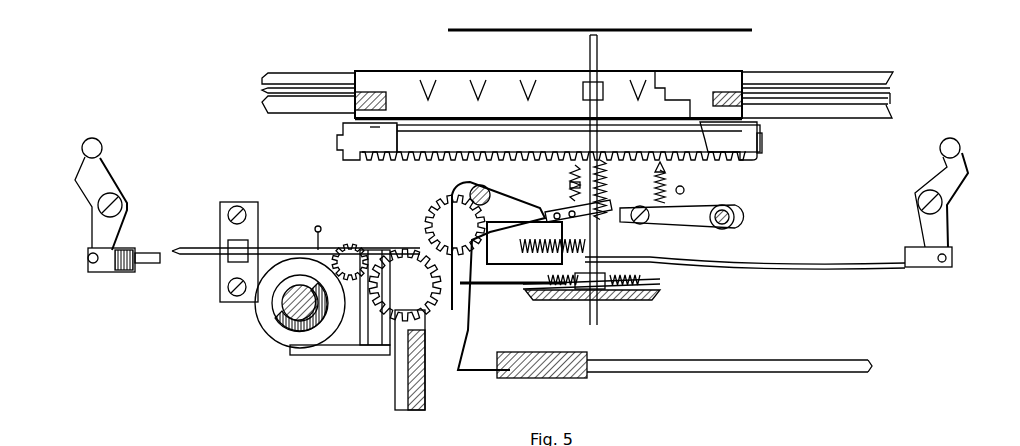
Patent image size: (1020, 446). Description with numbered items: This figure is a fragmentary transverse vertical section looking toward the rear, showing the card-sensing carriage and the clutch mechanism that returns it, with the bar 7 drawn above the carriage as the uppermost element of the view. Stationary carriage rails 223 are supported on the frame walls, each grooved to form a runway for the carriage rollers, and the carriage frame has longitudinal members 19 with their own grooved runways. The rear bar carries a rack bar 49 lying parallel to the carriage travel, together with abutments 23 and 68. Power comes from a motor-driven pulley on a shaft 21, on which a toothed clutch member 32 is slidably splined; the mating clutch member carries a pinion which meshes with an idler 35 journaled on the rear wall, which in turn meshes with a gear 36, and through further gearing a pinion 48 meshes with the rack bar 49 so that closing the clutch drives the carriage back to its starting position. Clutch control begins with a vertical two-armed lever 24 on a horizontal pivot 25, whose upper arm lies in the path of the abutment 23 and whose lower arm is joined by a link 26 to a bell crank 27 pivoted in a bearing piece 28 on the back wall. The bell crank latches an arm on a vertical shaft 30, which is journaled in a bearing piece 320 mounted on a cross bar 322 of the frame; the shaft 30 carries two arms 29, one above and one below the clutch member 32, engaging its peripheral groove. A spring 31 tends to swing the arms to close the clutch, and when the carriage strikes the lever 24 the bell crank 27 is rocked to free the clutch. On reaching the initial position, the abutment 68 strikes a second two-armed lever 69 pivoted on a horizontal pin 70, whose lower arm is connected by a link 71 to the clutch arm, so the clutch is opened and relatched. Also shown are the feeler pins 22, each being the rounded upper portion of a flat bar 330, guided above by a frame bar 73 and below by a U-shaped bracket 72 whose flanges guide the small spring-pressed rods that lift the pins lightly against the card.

The guide bar 7 is at (683, 30).
The longitudinal member 19 is at (418, 77).
The feeler pin 22 is at (588, 62).
The frame bar 73 is at (602, 95).
The stationary carriage rail 223 is at (268, 90).
The abutment 23 is at (338, 145).
The rack bar 49 is at (453, 152).
The abutment 68 is at (763, 148).
The two-armed lever 24 is at (80, 160).
The horizontal pivot 25 is at (98, 207).
The link 26 is at (162, 264).
The bearing piece 28 is at (225, 225).
The bell crank 27 is at (283, 249).
The spring 31 is at (315, 233).
The arm 29 is at (335, 252).
The shaft 21 is at (284, 306).
The toothed clutch member 32 is at (275, 326).
The idler 35 is at (360, 248).
The vertical shaft 30 is at (412, 298).
The bearing piece 320 is at (400, 388).
The cross bar 322 is at (426, 368).
The gear 36 is at (437, 212).
The pinion 48 is at (572, 185).
The link 71 is at (818, 262).
The horizontal pin 70 is at (918, 205).
The two-armed lever 69 is at (957, 152).
The bracket 72 is at (628, 302).
The flat bar 330 is at (565, 300).